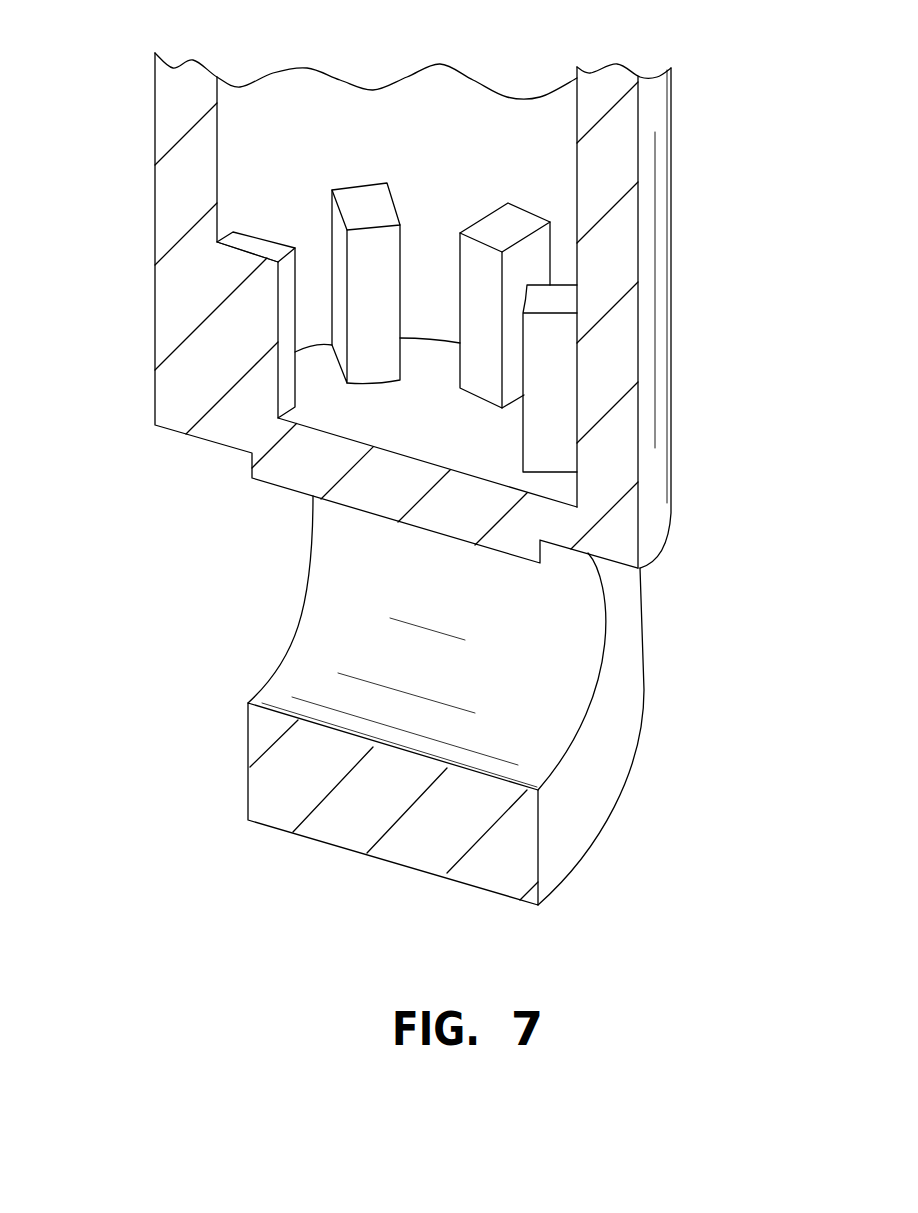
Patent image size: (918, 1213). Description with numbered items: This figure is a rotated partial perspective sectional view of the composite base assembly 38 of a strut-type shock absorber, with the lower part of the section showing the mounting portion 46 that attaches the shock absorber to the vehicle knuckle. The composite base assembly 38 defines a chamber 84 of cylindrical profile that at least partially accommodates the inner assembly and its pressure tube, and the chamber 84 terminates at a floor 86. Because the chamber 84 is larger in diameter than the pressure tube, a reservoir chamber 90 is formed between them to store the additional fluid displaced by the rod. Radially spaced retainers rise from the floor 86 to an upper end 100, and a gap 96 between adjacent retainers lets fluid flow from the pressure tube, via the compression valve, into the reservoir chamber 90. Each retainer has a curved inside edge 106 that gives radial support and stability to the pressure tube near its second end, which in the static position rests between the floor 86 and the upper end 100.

The composite base assembly 38 is at (703, 218).
The mounting portion 46 is at (537, 705).
The chamber 84 is at (266, 136).
The floor 86 is at (439, 430).
The reservoir chamber 90 is at (438, 263).
The gap 96 is at (318, 292).
The upper end 100 is at (247, 237).
The curved inside edge 106 is at (391, 312).